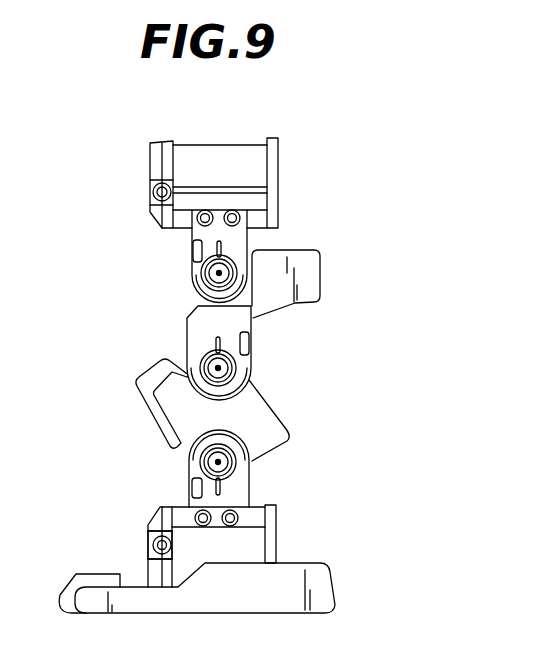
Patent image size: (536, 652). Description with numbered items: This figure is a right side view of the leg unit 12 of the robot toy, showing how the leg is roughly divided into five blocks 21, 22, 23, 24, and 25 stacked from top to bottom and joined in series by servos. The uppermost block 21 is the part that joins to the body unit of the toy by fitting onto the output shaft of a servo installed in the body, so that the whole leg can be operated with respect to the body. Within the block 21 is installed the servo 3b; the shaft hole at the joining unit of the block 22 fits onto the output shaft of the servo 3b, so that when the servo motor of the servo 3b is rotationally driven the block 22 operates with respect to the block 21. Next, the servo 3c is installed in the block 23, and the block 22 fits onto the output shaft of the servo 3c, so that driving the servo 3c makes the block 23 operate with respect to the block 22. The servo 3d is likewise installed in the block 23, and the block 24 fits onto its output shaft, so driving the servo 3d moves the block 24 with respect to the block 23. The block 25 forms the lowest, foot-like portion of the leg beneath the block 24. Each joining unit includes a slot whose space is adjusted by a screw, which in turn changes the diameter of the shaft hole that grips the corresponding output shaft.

The leg unit 12 is at (292, 146).
The block 21 is at (278, 180).
The block 22 is at (312, 273).
The block 23 is at (279, 419).
The block 24 is at (273, 505).
The block 25 is at (325, 583).
The servo 3b is at (211, 272).
The servo 3c is at (208, 367).
The servo 3d is at (174, 443).